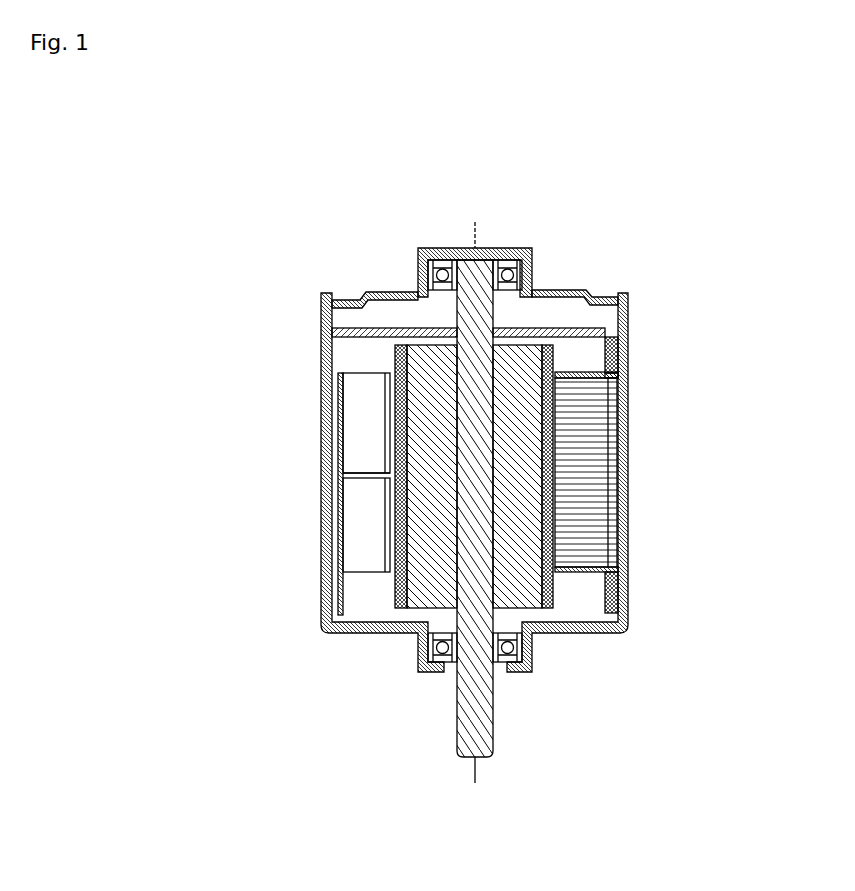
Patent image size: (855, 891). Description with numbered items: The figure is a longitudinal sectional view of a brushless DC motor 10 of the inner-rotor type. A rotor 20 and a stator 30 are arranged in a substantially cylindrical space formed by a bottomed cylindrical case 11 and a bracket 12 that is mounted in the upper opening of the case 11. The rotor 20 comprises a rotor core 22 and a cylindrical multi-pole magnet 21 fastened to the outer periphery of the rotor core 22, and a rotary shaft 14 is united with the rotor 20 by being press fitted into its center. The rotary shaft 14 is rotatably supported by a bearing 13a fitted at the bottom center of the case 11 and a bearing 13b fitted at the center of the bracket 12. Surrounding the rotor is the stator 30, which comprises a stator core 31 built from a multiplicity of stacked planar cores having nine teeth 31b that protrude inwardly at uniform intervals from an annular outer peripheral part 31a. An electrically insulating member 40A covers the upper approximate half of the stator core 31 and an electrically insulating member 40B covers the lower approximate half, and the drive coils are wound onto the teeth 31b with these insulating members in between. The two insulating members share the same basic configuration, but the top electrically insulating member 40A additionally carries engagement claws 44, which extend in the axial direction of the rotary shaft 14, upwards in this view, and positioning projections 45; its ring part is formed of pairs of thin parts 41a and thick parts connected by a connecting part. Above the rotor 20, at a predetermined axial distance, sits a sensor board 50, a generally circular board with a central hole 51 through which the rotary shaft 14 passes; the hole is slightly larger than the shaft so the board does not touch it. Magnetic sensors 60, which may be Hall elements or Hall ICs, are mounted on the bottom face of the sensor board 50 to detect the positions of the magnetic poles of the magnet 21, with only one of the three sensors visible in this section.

The brushless DC motor 10 is at (500, 438).
The case 11 is at (326, 455).
The bracket 12 is at (372, 322).
The bearing 13a is at (422, 664).
The bearing 13b is at (442, 256).
The rotary shaft 14 is at (498, 703).
The rotor 20 is at (435, 518).
The magnet 21 is at (346, 604).
The rotor core 22 is at (430, 557).
The stator 30 is at (355, 358).
The stator core 31 is at (637, 492).
The annular outer peripheral part 31a is at (612, 450).
The teeth 31b is at (612, 488).
The electrically insulating member 40A is at (356, 397).
The electrically insulating member 40B is at (356, 524).
The thin parts 41a is at (612, 352).
The engagement claws 44 is at (612, 332).
The positioning projections 45 is at (622, 300).
The sensor board 50 is at (362, 302).
The central hole 51 is at (395, 298).
The magnetic sensors 60 is at (536, 385).